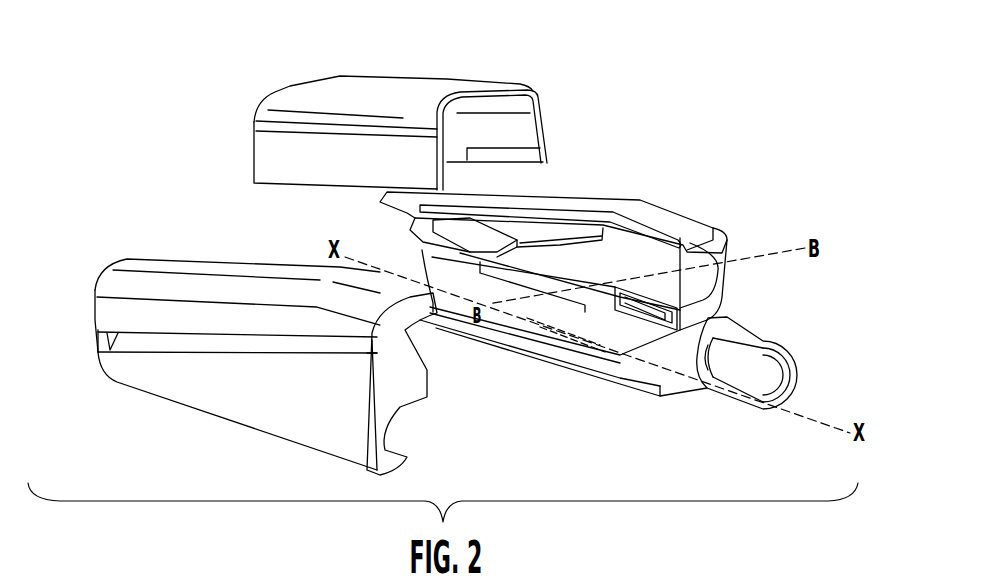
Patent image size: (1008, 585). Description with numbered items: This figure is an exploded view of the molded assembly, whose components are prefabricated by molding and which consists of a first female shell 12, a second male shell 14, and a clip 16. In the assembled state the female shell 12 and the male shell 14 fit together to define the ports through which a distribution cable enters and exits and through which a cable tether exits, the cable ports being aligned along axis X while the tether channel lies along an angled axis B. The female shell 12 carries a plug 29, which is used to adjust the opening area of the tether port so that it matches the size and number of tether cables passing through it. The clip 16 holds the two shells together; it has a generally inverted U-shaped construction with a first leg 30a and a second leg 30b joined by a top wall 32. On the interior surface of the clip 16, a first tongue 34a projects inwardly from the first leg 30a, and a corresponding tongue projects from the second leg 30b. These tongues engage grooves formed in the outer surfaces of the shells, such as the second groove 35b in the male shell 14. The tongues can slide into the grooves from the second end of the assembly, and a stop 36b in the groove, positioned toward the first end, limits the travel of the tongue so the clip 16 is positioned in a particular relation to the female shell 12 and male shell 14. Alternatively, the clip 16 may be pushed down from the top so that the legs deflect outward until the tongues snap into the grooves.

The first female shell 12 is at (688, 217).
The second male shell 14 is at (244, 325).
The clip 16 is at (437, 107).
The plug 29 is at (777, 400).
The first leg 30a is at (546, 128).
The second leg 30b is at (293, 151).
The top wall 32 is at (340, 87).
The first tongue 34a is at (531, 164).
The second groove 35b is at (273, 345).
The stop 36b is at (118, 334).